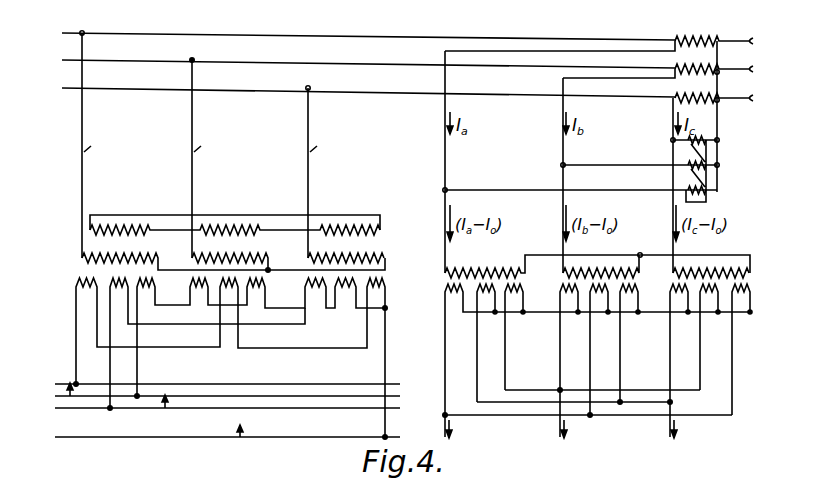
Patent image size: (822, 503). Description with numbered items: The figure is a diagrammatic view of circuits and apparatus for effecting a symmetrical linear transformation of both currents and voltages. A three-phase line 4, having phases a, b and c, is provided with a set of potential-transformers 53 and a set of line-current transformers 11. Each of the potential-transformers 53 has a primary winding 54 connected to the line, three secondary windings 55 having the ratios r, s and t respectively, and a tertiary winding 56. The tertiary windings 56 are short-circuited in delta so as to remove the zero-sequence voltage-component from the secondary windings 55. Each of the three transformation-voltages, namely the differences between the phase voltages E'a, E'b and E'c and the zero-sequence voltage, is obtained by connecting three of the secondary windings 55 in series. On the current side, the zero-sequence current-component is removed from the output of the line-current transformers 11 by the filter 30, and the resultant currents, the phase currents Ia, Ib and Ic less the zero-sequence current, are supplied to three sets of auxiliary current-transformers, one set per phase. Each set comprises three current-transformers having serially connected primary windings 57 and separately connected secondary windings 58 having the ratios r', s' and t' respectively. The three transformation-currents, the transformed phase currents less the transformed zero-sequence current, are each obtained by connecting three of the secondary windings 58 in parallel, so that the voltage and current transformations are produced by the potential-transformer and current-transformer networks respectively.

The three-phase line 4 is at (290, 88).
The line-current transformers 11 is at (678, 39).
The filter 30 is at (752, 166).
The potential-transformers 53 is at (62, 253).
The primary winding 54 is at (385, 268).
The secondary windings 55 is at (385, 282).
The tertiary winding 56 is at (380, 230).
The primary windings 57 is at (750, 273).
The secondary windings 58 is at (750, 288).